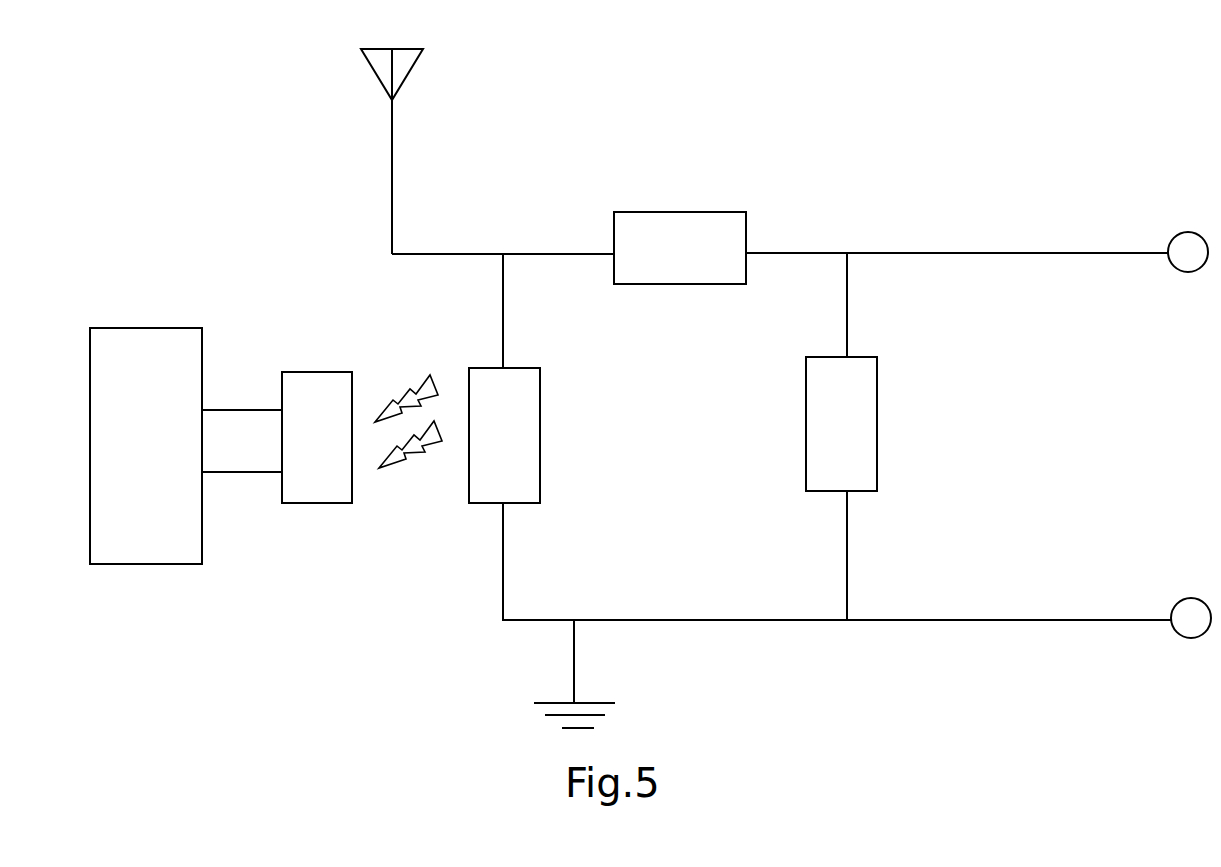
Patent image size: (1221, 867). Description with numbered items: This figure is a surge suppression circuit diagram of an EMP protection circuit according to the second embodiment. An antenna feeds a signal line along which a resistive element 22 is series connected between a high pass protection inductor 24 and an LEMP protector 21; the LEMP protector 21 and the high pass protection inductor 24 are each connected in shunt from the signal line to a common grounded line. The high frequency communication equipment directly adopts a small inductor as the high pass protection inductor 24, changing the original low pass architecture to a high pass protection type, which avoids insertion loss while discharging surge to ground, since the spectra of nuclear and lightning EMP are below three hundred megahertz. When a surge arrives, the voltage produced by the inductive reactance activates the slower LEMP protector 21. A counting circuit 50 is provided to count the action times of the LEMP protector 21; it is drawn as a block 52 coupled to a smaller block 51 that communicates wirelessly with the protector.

The counting circuit 50 is at (124, 281).
The transmitter / light emitter 51 is at (317, 503).
The control unit 52 is at (150, 564).
The LEMP protector 21 is at (533, 460).
The resistive element 22 is at (705, 212).
The high pass protection inductor 24 is at (877, 385).